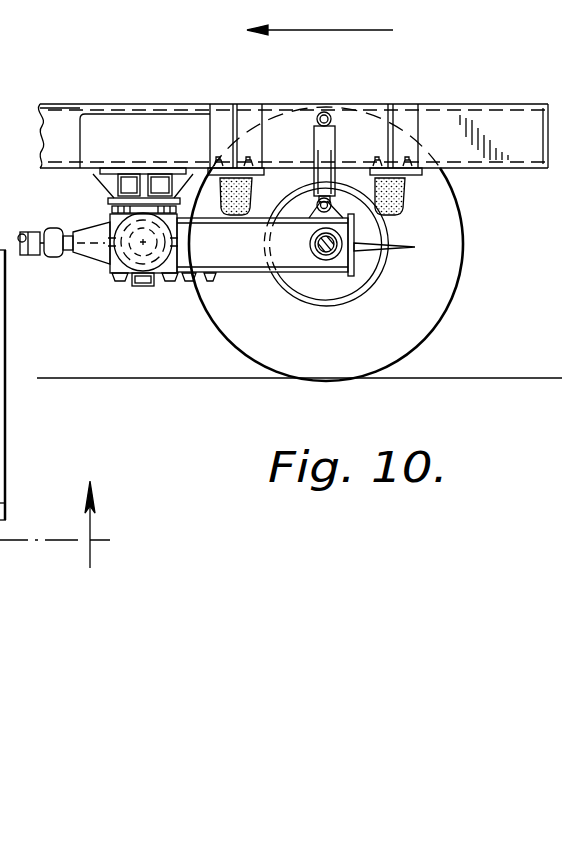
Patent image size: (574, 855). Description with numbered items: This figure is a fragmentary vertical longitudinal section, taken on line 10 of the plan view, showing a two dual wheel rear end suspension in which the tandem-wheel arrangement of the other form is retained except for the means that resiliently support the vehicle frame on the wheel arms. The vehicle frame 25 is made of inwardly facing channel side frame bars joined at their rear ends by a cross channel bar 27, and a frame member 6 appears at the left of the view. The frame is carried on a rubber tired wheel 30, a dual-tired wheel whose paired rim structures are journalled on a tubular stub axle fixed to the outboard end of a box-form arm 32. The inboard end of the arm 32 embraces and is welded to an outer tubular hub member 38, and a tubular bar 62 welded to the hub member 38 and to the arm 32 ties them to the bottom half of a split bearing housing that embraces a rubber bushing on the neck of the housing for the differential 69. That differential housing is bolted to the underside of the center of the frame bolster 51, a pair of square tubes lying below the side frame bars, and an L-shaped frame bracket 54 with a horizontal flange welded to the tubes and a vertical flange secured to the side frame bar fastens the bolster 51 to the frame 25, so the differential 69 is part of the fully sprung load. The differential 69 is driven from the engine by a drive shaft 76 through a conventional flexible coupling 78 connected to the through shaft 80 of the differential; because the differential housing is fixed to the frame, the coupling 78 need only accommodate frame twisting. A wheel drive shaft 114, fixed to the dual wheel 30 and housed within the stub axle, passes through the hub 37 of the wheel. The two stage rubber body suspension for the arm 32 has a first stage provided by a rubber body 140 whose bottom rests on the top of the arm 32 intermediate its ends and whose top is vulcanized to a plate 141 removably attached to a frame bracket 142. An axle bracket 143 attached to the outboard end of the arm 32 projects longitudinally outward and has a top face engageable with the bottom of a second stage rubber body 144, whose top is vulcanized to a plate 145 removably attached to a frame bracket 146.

The vehicle frame member 6 is at (46, 114).
The section line 10 is at (65, 524).
The vehicle frame 25 is at (60, 88).
The cross channel bar 27 is at (538, 117).
The rubber tired wheel 30 is at (448, 340).
The arm 32 is at (212, 272).
The wheel hub 37 is at (310, 243).
The outer tubular hub member 38 is at (137, 250).
The frame bolster 51 is at (106, 181).
The L-shaped frame bracket 54 is at (133, 124).
The tubular bar 62 is at (140, 285).
The differential 69 is at (165, 290).
The drive shaft 76 is at (33, 232).
The flexible coupling 78 is at (54, 258).
The through shaft 80 is at (68, 251).
The drive shaft 114 is at (330, 262).
The rubber body 140 is at (236, 203).
The plate 141 is at (192, 176).
The frame bracket 142 is at (218, 122).
The axle bracket 143 is at (404, 252).
The rubber body 144 is at (405, 205).
The plate 145 is at (405, 181).
The frame bracket 146 is at (378, 128).